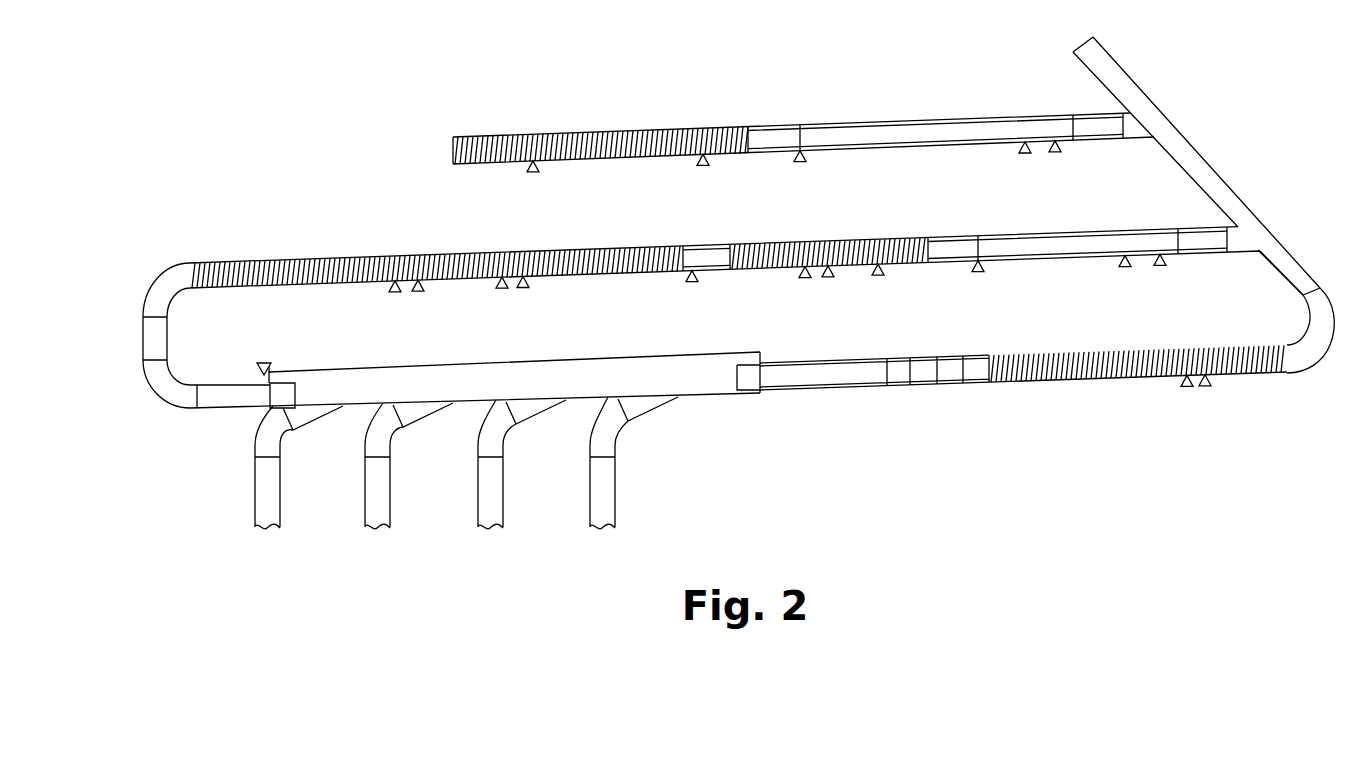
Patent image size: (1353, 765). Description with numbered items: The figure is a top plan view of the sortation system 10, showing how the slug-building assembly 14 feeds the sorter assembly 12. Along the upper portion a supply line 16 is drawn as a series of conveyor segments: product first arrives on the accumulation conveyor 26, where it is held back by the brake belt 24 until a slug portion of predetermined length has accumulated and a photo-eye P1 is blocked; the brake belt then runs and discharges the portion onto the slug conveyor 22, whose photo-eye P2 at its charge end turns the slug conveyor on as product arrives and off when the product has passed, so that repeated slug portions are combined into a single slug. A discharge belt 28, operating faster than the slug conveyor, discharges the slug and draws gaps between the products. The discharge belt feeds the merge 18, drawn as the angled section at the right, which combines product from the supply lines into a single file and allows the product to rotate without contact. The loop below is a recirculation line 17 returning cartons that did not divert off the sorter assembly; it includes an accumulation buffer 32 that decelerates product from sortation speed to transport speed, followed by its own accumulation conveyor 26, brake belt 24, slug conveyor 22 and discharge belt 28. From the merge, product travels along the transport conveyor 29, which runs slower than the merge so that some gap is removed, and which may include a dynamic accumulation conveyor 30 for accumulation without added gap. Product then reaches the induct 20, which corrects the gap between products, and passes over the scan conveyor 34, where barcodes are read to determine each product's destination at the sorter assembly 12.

The sortation system 10 is at (842, 481).
The sorter assembly 12 is at (600, 352).
The slug-building assembly 14 is at (722, 127).
The supply line 16 is at (452, 136).
The recirculation line 17 is at (153, 272).
The merge 18 is at (1203, 150).
The induct 20 is at (927, 357).
The slug conveyor 22 is at (873, 122).
The brake belt 24 is at (770, 127).
The accumulation conveyor 26 is at (580, 135).
The discharge belt 28 is at (1097, 115).
The transport conveyor 29 is at (1334, 345).
The dynamic accumulation conveyor 30 is at (1085, 346).
The accumulation buffer 32 is at (455, 252).
The scan conveyor 34 is at (812, 357).
The photo-eye P1 is at (704, 167).
The photo-eye P2 is at (801, 163).